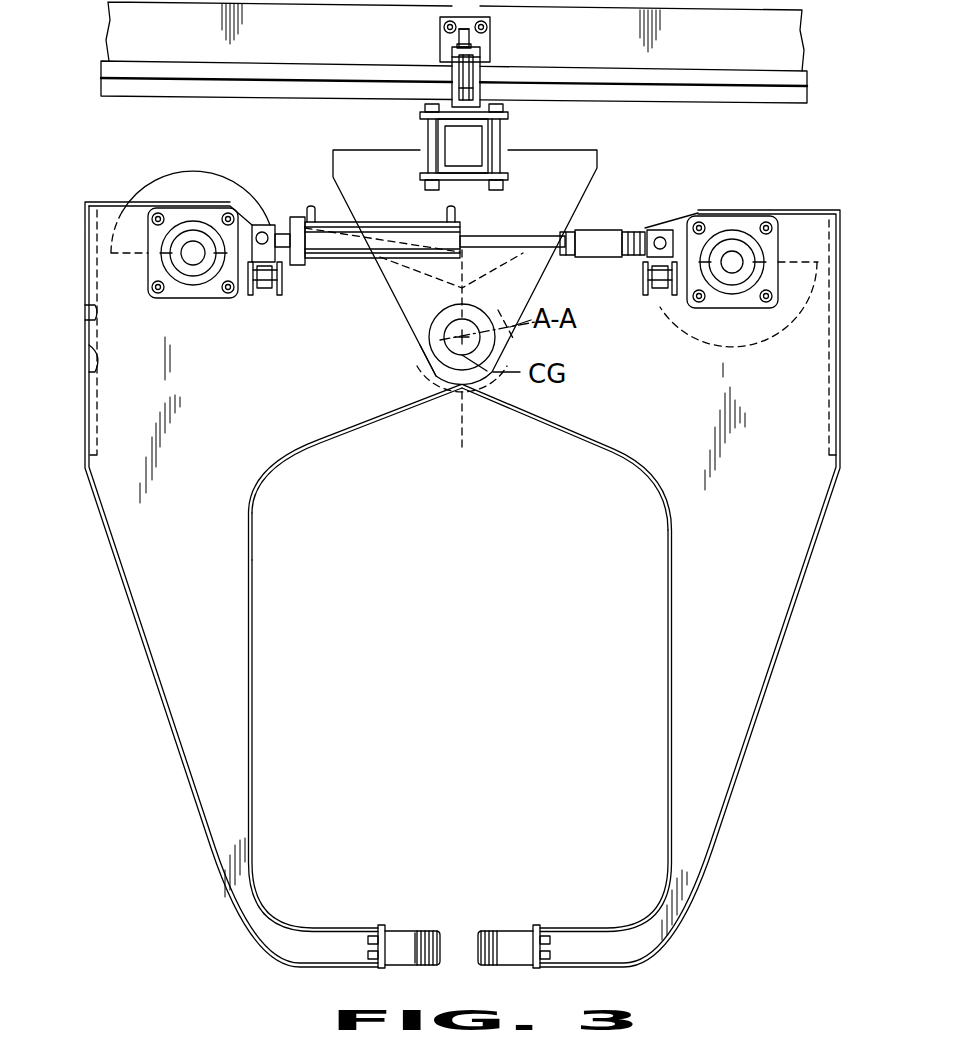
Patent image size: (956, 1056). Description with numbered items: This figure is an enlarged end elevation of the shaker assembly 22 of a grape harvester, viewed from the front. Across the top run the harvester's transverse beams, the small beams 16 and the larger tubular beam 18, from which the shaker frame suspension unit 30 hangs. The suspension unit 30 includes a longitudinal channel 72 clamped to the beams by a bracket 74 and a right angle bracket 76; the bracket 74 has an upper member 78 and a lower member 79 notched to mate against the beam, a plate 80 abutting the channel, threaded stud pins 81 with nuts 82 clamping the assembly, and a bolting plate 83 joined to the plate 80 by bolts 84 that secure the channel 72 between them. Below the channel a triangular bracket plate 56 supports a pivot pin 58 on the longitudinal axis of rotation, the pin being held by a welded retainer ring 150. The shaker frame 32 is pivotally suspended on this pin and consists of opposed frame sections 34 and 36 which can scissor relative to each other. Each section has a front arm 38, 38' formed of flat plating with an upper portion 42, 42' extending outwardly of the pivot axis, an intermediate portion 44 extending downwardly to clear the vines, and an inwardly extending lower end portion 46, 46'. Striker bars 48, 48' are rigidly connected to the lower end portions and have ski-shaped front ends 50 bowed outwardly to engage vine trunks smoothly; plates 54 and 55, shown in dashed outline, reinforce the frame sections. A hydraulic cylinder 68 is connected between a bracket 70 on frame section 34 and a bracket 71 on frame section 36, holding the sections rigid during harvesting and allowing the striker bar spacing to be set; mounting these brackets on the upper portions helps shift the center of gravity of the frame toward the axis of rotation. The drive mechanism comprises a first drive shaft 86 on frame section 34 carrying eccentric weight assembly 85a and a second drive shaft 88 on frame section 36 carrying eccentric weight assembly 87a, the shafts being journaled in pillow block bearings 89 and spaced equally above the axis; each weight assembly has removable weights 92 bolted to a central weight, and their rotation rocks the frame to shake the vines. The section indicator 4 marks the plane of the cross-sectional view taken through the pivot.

The tubular beam 18 is at (186, 41).
The small beams 16 is at (207, 93).
The shaker assembly 22 is at (726, 157).
The shaker frame suspension unit 30 is at (600, 153).
The shaker frame 32 is at (124, 604).
The frame section 34 is at (152, 672).
The frame section 36 is at (754, 736).
The front arm 38 is at (314, 746).
The front arm 38' is at (606, 731).
The upper portion 42 is at (356, 449).
The upper portion 42' is at (567, 457).
The intermediate portion 44 is at (228, 572).
The lower end portion 46 is at (351, 924).
The lower end portion 46' is at (572, 924).
The striker bar 48 is at (412, 923).
The striker bar 48' is at (505, 923).
The front end 50 is at (415, 965).
The plate 54 is at (83, 330).
The plate 55 is at (90, 358).
The bracket plate 56 is at (400, 284).
The pivot pin 58 is at (452, 322).
The retainer ring 150 is at (437, 343).
The hydraulic cylinder 68 is at (373, 223).
The bracket 70 is at (280, 268).
The bracket 71 is at (647, 266).
The channel 72 is at (438, 133).
The bracket 74 is at (452, 57).
The bracket 76 is at (488, 34).
The upper member 78 is at (481, 55).
The lower member 79 is at (480, 88).
The plate 80 is at (508, 117).
The threaded stud pin 81 is at (458, 27).
The nut 82 is at (457, 44).
The bolting plate 83 is at (508, 172).
The bolt 84 is at (432, 191).
The eccentric weight assembly 85a is at (162, 172).
The first drive shaft 86 is at (190, 265).
The eccentric weight assembly 87a is at (688, 336).
The second drive shaft 88 is at (735, 258).
The pillow block bearing 89 is at (198, 268).
The removable weight 92 is at (150, 185).
The section line 4- 4 is at (420, 266).